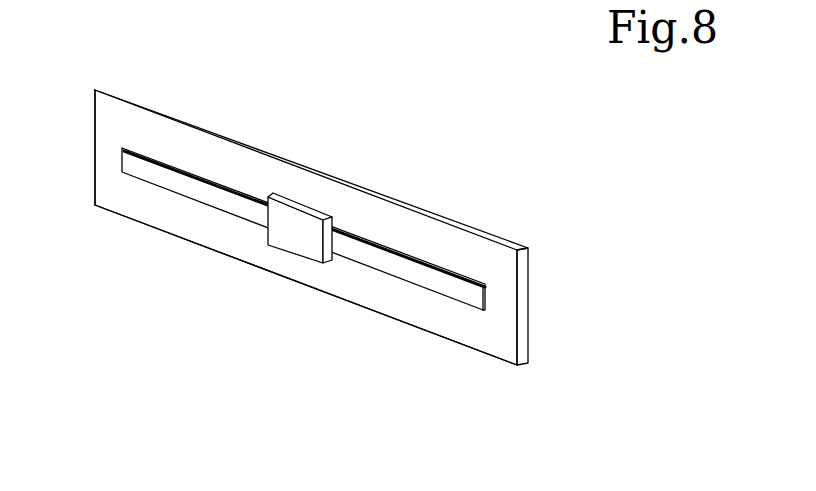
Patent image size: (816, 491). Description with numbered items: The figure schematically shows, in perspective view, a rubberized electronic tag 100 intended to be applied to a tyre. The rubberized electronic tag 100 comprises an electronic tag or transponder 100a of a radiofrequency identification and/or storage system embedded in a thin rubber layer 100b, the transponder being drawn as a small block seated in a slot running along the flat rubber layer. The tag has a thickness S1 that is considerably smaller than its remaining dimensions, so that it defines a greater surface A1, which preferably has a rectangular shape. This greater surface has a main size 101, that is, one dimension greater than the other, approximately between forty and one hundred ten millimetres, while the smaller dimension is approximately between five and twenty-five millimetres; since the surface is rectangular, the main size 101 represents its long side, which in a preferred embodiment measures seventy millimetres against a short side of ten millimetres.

The rubberized electronic tag 100 is at (433, 180).
The main size 101 is at (209, 131).
The electronic tag or transponder 100a is at (295, 231).
The thin rubber layer 100b is at (437, 315).
The greater surface A1 is at (130, 214).
The thickness S1 is at (522, 367).